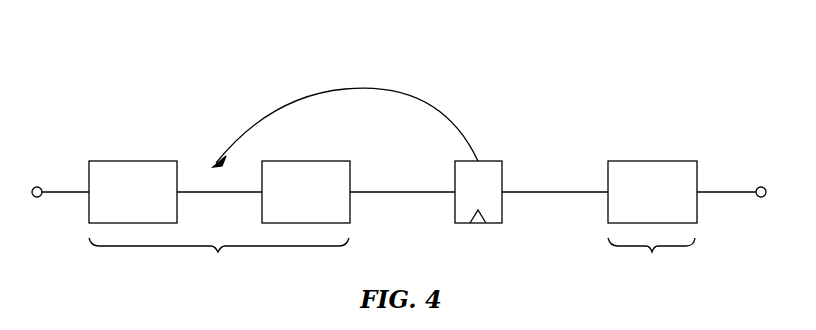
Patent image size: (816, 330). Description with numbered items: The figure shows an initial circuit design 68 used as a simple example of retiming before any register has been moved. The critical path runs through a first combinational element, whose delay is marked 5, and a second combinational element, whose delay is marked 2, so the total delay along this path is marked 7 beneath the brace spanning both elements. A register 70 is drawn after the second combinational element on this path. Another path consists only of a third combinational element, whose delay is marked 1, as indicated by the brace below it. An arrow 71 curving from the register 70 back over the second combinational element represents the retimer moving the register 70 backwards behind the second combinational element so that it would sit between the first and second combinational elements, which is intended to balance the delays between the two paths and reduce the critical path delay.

The initial circuit design 68 is at (572, 43).
The arrow 71 is at (355, 87).
The register 70 is at (502, 161).
The first circuit block C1 5 is at (133, 179).
The second circuit block C2 2 is at (306, 179).
The third circuit block C3 1 is at (652, 206).
The combined block group 7 is at (219, 257).